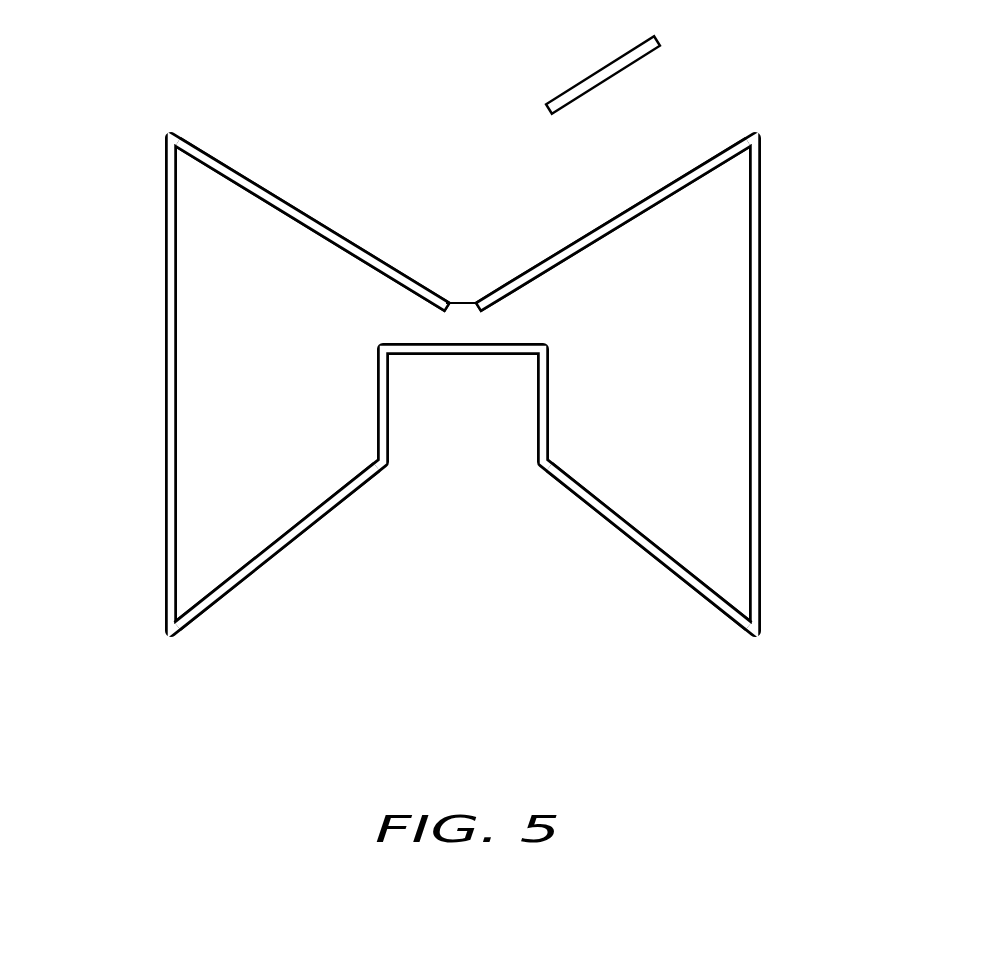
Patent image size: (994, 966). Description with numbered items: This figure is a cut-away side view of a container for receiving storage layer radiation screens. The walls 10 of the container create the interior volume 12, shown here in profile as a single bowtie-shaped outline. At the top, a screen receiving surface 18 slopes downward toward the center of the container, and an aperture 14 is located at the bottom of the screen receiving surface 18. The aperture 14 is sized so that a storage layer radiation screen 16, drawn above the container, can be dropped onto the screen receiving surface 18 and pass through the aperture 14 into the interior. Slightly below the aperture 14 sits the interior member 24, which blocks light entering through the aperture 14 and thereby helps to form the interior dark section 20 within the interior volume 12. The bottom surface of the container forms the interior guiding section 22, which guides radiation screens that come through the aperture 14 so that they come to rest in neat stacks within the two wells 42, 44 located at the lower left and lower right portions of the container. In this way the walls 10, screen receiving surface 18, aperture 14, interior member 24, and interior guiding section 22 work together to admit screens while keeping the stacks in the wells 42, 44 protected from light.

The walls 10 is at (163, 273).
The interior volume 12 is at (718, 240).
The aperture 14 is at (452, 267).
The storage layer radiation screen 16 is at (620, 77).
The screen receiving surface 18 is at (222, 158).
The interior dark section 20 is at (713, 402).
The interior guiding section 22 is at (388, 475).
The interior member 24 is at (447, 356).
The well 42 is at (222, 512).
The well 44 is at (718, 553).